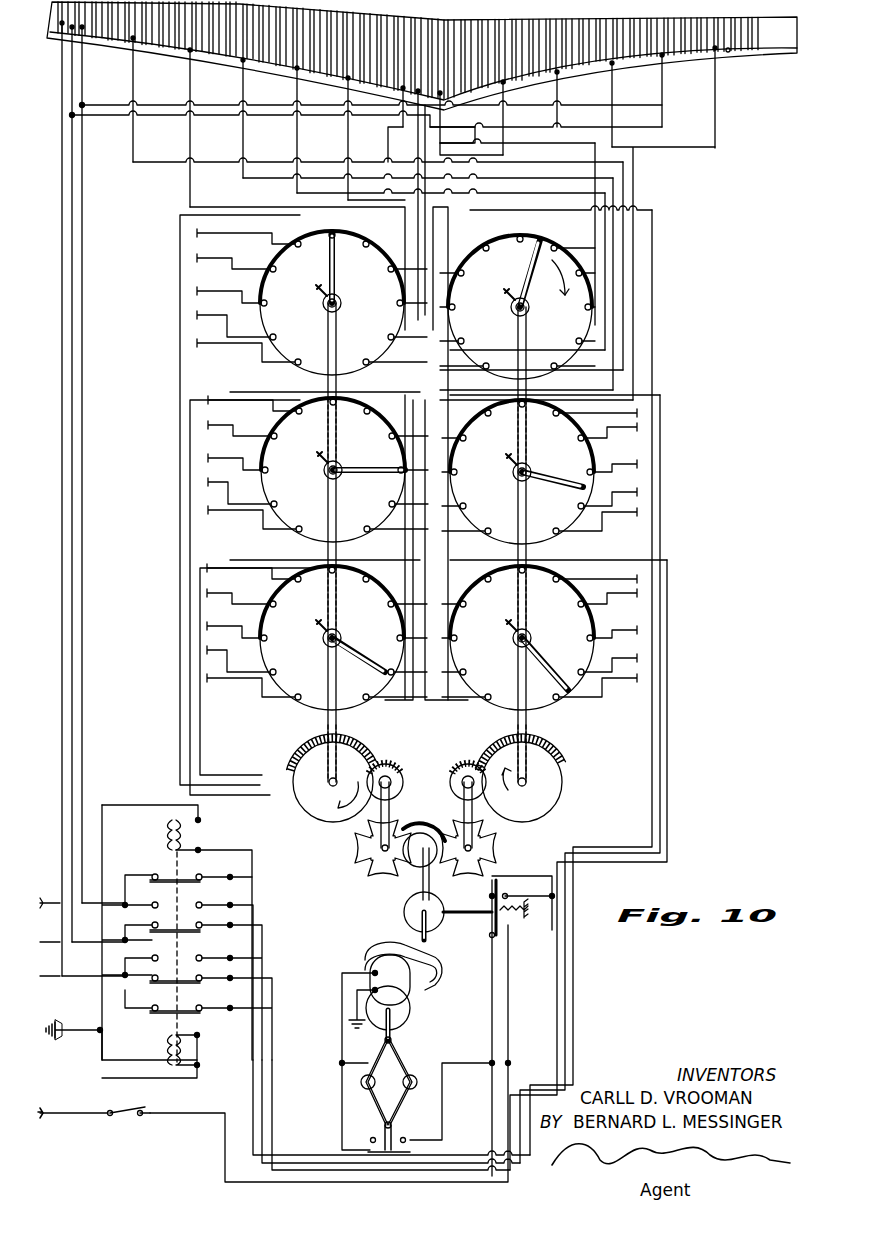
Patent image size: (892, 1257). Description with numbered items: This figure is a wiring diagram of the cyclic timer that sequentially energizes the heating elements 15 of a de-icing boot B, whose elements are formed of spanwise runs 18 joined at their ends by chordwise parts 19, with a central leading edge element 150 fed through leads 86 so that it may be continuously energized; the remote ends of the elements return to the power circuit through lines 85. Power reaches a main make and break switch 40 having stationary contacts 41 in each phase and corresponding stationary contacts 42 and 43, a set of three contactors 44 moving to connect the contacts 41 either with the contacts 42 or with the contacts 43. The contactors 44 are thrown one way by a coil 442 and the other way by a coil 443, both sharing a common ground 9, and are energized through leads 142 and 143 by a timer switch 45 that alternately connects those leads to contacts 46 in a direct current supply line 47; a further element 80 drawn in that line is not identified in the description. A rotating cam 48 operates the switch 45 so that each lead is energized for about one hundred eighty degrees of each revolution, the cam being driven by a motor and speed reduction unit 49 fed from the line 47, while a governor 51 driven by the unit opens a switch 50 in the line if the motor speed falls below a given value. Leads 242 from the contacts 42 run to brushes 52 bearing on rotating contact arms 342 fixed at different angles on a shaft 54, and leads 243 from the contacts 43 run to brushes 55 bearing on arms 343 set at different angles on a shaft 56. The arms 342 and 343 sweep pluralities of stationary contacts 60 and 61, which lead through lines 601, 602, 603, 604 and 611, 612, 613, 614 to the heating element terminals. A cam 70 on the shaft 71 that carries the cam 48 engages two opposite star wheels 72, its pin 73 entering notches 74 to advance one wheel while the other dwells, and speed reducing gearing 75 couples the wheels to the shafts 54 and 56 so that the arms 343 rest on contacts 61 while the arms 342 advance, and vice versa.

The de-icing boot B is at (765, 70).
The heating element 15 is at (728, 52).
The runs 18 is at (694, 42).
The transverse parts 19 is at (588, 75).
The leading edge heating element 150 is at (416, 32).
The energizing leads 86 is at (110, 106).
The lines 85 is at (106, 120).
The line 611 is at (408, 137).
The line 612 is at (297, 190).
The line 613 is at (190, 207).
The line 614 is at (480, 127).
The line 601 is at (700, 150).
The line 602 is at (623, 278).
The line 603 is at (613, 230).
The line 604 is at (605, 180).
The leads 242 is at (652, 720).
The leads 243 is at (180, 445).
The stationary contacts 61 is at (372, 365).
The stationary contacts 60 is at (580, 340).
The rotating contact arms 343 is at (333, 250).
The rotating contact arms 342 is at (540, 262).
The brushes 55 is at (320, 293).
The brushes 52 is at (510, 298).
The shaft 56 is at (332, 352).
The shaft 54 is at (520, 520).
The speed reducing gearing 75 is at (546, 795).
The star wheels 72 is at (365, 857).
The cam 70 is at (428, 835).
The notches 74 is at (368, 880).
The pin 73 is at (445, 878).
The rotating cam 48 is at (410, 915).
The shaft 71 is at (425, 945).
The motor and speed reduction unit 49 is at (408, 1010).
The governor 51 is at (376, 1090).
The switch 50 is at (392, 1148).
The contacts 46 is at (505, 896).
The timer switch 45 is at (488, 925).
The D.C. supply line 47 is at (548, 938).
The switch 80 is at (128, 1115).
The energizing lead 143 is at (235, 850).
The energizing lead 142 is at (508, 1005).
The coil 443 is at (172, 822).
The coil 442 is at (168, 1055).
The main make and break switch 40 is at (126, 872).
The contactors 44 is at (175, 890).
The stationary contacts 41 is at (153, 1010).
The stationary contacts 42 is at (202, 1010).
The stationary contacts 43 is at (215, 975).
The ground 9 is at (50, 1035).